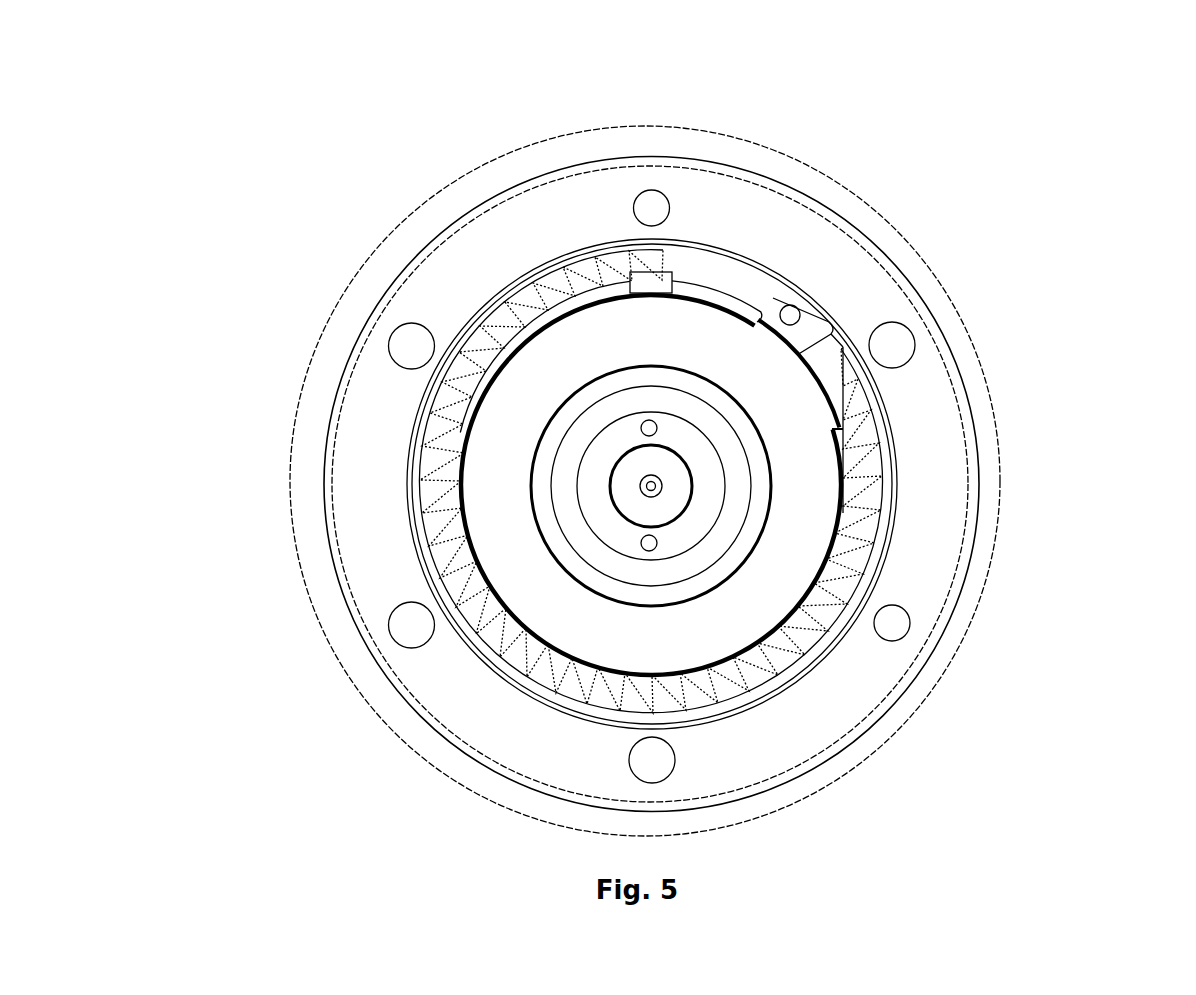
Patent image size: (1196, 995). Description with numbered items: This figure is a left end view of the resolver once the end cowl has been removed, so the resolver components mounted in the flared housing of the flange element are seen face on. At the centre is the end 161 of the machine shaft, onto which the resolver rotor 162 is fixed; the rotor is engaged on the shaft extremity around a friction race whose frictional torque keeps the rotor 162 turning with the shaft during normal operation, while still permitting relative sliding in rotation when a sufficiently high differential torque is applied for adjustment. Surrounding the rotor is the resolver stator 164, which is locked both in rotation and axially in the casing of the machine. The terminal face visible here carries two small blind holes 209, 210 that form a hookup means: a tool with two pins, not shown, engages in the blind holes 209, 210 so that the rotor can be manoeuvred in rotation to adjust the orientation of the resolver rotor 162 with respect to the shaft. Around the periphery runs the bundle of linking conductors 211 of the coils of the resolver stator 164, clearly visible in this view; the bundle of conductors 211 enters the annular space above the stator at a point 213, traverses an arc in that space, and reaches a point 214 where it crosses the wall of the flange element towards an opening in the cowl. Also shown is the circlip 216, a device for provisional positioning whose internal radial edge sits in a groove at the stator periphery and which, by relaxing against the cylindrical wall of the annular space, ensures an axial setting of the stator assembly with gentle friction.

The end of the shaft 161 is at (668, 458).
The resolver rotor 162 is at (618, 403).
The resolver stator 164 is at (490, 441).
The blind hole 209 is at (641, 430).
The blind hole 210 is at (641, 542).
The bundle of linking conductors 211 is at (543, 290).
The entry point of the bundle of conductors 213 is at (657, 267).
The crossing point of the bundle of conductors 214 is at (865, 393).
The circlip 216 is at (727, 267).